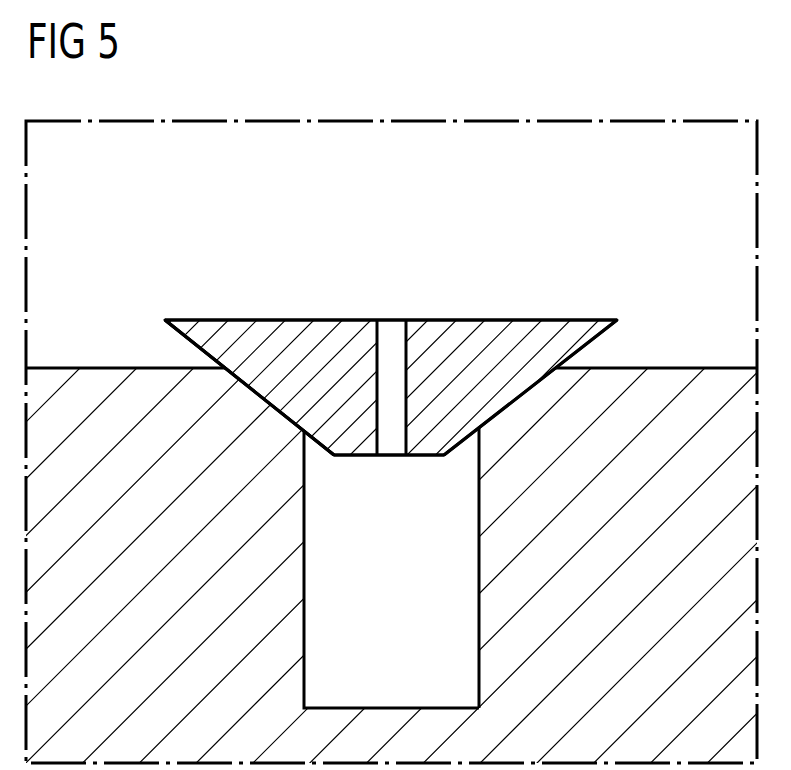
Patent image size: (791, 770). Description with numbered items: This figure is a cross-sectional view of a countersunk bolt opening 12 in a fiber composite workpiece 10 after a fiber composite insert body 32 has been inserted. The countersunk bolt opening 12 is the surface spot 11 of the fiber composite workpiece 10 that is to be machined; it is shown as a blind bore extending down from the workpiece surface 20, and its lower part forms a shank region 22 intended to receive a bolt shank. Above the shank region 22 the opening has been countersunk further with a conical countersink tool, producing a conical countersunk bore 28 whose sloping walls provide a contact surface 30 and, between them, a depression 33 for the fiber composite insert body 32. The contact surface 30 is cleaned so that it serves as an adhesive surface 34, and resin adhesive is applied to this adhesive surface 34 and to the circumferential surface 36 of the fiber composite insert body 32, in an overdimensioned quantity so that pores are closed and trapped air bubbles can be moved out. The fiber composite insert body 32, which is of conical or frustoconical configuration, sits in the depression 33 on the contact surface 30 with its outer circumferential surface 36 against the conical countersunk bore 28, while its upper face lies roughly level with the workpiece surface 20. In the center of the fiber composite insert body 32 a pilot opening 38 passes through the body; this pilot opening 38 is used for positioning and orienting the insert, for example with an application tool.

The fiber composite workpiece 10 is at (197, 222).
The surface spot 11 is at (317, 274).
The countersunk bolt opening 12 is at (305, 561).
The workpiece surface 20 is at (662, 367).
The shank region 22 is at (479, 660).
The conical countersunk bore 28 is at (253, 391).
The contact surface 30 is at (537, 386).
The fiber composite insert body 32 is at (182, 309).
The depression 33 is at (460, 453).
The adhesive surface 34 is at (289, 421).
The circumferential surface 36 is at (181, 334).
The pilot opening 38 is at (393, 332).